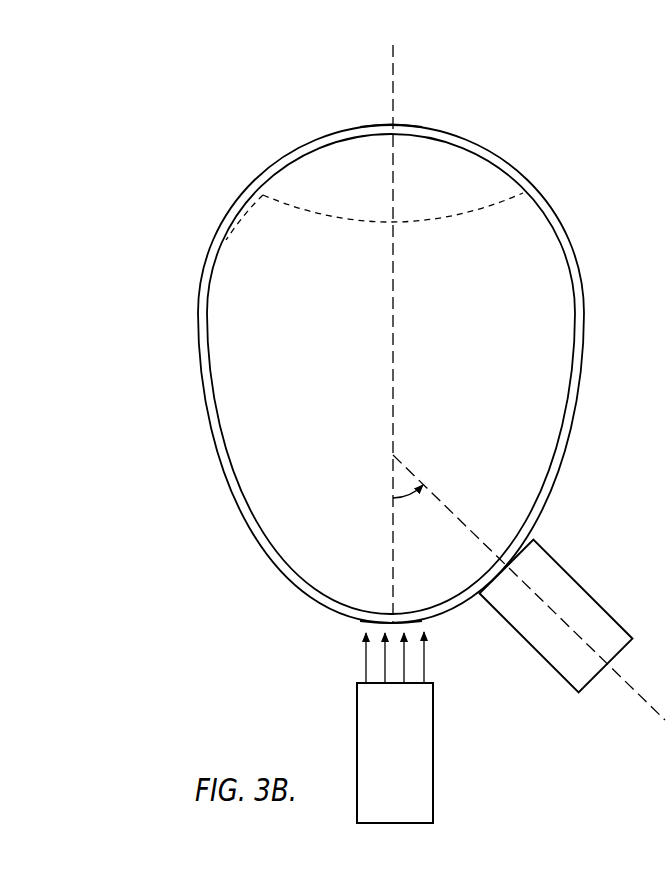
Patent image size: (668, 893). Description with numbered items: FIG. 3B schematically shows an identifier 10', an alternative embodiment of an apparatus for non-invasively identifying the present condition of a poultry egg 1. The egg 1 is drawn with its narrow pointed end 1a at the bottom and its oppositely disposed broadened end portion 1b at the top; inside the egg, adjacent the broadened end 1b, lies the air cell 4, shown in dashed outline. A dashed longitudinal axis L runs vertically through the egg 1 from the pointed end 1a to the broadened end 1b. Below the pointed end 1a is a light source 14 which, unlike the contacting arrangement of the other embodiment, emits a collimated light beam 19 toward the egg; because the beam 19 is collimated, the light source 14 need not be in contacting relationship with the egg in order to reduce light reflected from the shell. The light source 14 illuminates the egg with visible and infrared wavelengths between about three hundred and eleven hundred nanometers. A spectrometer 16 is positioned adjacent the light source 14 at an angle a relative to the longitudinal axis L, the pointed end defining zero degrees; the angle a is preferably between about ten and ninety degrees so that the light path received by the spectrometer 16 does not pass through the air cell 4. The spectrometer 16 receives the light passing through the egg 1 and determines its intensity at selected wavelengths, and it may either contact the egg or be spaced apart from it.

The egg 1 is at (527, 183).
The pointed end 1a is at (342, 619).
The broadened end portion 1b is at (414, 126).
The longitudinal axis L is at (394, 45).
The air cell 4 is at (226, 238).
The identifier 10' is at (623, 62).
The angle a is at (430, 497).
The light source 14 is at (433, 749).
The spectrometer 16 is at (612, 597).
The collimated light beam 19 is at (430, 661).